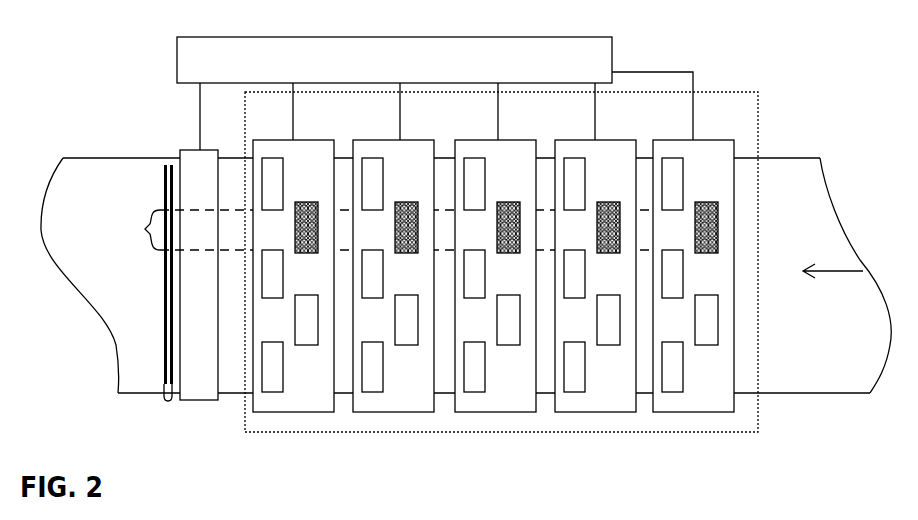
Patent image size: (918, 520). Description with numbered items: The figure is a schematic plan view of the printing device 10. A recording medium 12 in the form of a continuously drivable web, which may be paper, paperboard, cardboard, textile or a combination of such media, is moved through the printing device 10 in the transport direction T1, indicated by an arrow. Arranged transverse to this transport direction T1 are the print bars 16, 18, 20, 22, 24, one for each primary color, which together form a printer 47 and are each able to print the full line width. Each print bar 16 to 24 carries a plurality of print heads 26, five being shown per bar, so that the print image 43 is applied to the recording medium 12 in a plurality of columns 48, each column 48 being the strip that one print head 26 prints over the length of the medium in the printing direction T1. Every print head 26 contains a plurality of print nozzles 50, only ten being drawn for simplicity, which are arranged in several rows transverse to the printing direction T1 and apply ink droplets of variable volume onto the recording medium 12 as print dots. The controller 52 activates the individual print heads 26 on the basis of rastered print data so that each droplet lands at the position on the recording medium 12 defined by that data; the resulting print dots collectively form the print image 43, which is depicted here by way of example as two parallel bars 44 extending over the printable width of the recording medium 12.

The printing device 10 is at (100, 78).
The recording medium 12 is at (800, 158).
The print bar 16 is at (710, 140).
The print bar 18 is at (614, 140).
The print bar 20 is at (518, 140).
The print bar 22 is at (423, 140).
The print bar 24 is at (323, 140).
The print head 26 is at (295, 228).
The print image 43 is at (168, 401).
The detector sensing lines 44 is at (175, 283).
The printer 47 is at (245, 120).
The column 48 is at (145, 229).
The print nozzle 50 is at (310, 253).
The controller 52 is at (612, 57).
The transport direction T1 is at (824, 275).